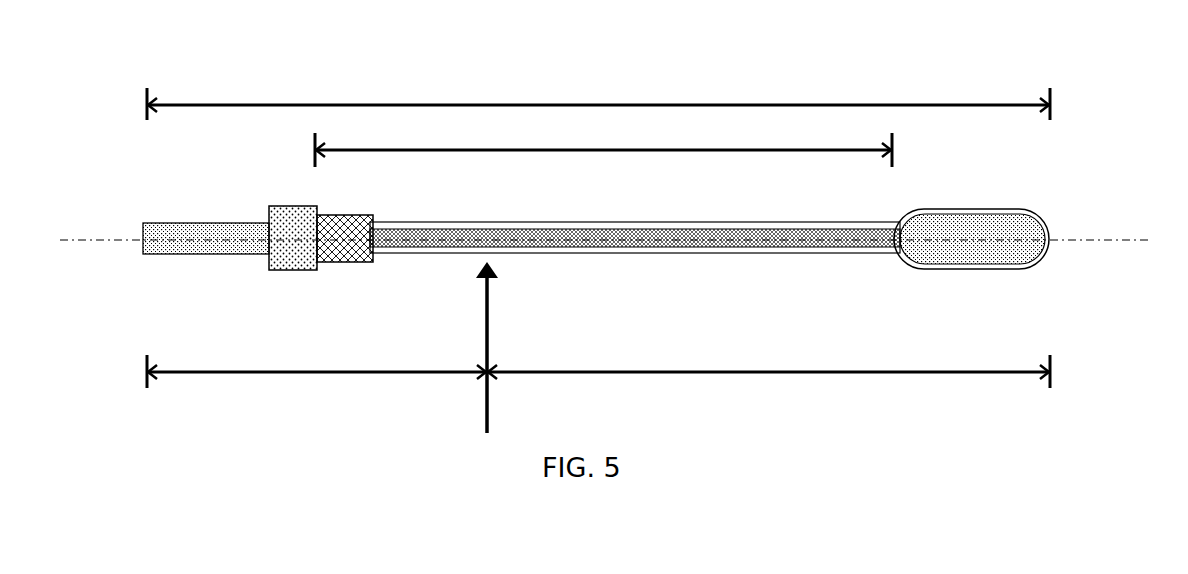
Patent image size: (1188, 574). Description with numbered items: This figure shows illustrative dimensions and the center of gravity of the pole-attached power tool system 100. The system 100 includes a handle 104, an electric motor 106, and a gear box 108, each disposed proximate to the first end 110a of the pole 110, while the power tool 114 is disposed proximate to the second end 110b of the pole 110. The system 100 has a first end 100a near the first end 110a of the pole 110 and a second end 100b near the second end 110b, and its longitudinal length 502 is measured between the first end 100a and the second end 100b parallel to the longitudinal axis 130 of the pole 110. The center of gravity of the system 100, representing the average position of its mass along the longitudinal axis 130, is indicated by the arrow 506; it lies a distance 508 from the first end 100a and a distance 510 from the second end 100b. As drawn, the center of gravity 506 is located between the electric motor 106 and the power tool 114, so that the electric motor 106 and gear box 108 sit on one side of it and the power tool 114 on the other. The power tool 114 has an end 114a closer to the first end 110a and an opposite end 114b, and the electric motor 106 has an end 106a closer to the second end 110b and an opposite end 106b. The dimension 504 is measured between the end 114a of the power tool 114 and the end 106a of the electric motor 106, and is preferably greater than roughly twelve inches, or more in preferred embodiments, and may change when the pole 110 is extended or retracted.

The pole-attached power tool system 100 is at (143, 156).
The first end of the system 100a is at (123, 189).
The second end of the system 100b is at (1059, 196).
The handle 104 is at (183, 223).
The electric motor 106 is at (301, 205).
The end of the electric motor 106a is at (306, 281).
The end of the electric motor 106b is at (276, 200).
The gear box 108 is at (341, 262).
The pole 110 is at (740, 255).
The first end of the pole 110a is at (393, 213).
The second end of the pole 110b is at (883, 213).
The power tool 114 is at (931, 268).
The end of the power tool 114a is at (907, 274).
The end of the power tool 114b is at (1051, 269).
The longitudinal axis 130 is at (83, 236).
The longitudinal length 502 is at (633, 104).
The dimension 504 is at (498, 149).
The center of gravity 506 is at (483, 402).
The distance 508 is at (266, 372).
The distance 510 is at (631, 372).